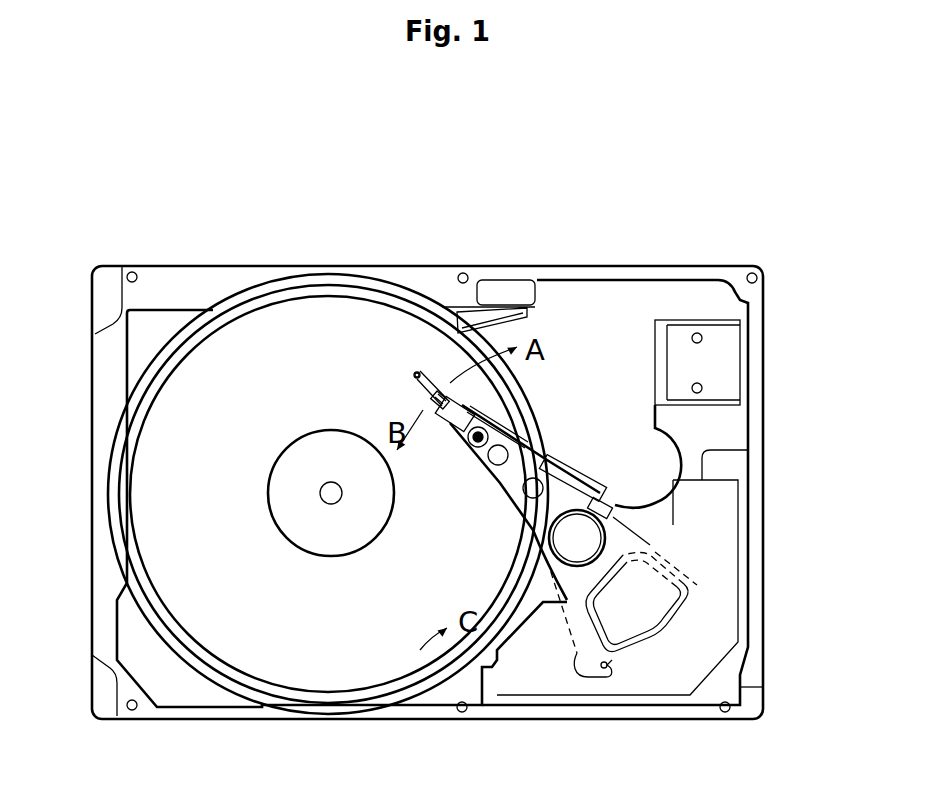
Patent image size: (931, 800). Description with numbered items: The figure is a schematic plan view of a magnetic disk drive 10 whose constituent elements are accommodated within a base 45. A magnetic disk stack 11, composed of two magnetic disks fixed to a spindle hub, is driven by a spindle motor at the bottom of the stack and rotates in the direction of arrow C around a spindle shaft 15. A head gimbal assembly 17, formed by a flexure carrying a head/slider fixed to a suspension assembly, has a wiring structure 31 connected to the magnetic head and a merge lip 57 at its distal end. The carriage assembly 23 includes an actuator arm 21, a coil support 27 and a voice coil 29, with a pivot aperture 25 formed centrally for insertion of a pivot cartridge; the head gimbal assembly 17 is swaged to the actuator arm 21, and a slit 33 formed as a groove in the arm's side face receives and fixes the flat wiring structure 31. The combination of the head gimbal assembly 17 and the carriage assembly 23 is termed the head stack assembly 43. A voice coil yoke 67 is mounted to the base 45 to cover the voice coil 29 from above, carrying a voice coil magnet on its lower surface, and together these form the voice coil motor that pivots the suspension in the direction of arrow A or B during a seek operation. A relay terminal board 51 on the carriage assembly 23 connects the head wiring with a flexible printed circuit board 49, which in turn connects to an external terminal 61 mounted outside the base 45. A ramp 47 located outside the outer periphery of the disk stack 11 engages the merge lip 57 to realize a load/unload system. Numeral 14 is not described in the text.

The magnetic disk drive 10 is at (343, 262).
The magnetic disk stack 11 is at (337, 633).
The base 14 is at (208, 655).
The spindle shaft 15 is at (331, 493).
The head gimbal assembly 17 is at (413, 392).
The actuator arm 21 is at (463, 458).
The carriage assembly 23 is at (522, 530).
The pivot aperture 25 is at (590, 542).
The coil support 27 is at (577, 660).
The voice coil 29 is at (665, 640).
The wiring structure 31 is at (497, 417).
The slit 33 is at (543, 444).
The head stack assembly 43 is at (488, 497).
The base 45 is at (618, 307).
The ramp 47 is at (503, 310).
The flexible printed circuit board 49 is at (673, 445).
The relay terminal board 51 is at (593, 463).
The merge lip 57 is at (416, 370).
The external terminal 61 is at (720, 365).
The voice coil yoke 67 is at (747, 492).